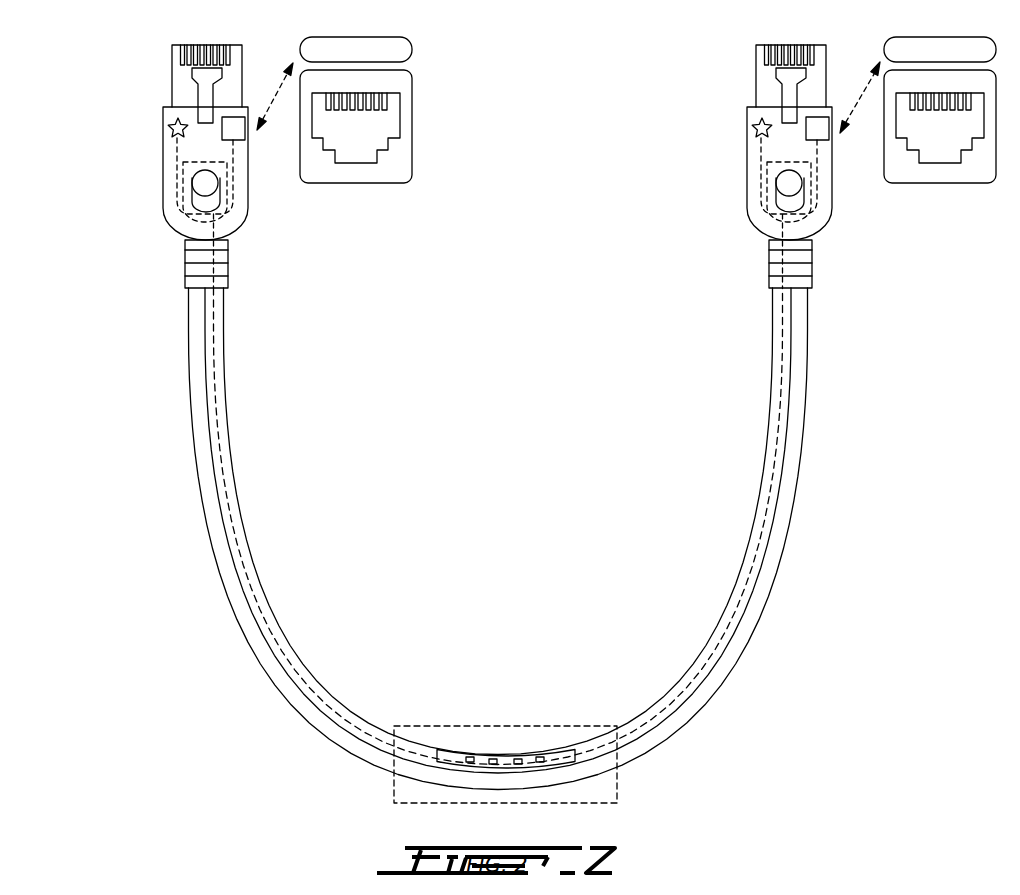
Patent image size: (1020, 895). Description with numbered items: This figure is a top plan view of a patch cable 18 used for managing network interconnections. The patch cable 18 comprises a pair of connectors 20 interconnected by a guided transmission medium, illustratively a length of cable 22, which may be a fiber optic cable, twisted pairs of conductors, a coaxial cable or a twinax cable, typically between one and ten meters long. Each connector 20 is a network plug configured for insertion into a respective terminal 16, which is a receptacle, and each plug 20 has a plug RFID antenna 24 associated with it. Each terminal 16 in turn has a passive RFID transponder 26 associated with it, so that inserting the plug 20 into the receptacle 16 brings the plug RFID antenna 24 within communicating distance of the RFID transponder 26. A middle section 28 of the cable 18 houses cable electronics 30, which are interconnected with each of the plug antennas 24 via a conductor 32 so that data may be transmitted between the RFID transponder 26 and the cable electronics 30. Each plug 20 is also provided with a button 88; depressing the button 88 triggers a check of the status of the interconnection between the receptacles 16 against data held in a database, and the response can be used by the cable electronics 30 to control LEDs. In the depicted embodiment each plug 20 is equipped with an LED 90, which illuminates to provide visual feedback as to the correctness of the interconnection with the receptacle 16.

The terminal 16 is at (355, 183).
The patch cable 18 is at (495, 594).
The connector 20 is at (163, 160).
The cable 22 is at (243, 640).
The plug RFID antenna 24 is at (234, 130).
The passive RFID transponder 26 is at (412, 50).
The middle section 28 is at (437, 726).
The cable electronics 30 is at (540, 757).
The conductor 32 is at (262, 624).
The button 88 is at (198, 190).
The LED 90 is at (169, 128).